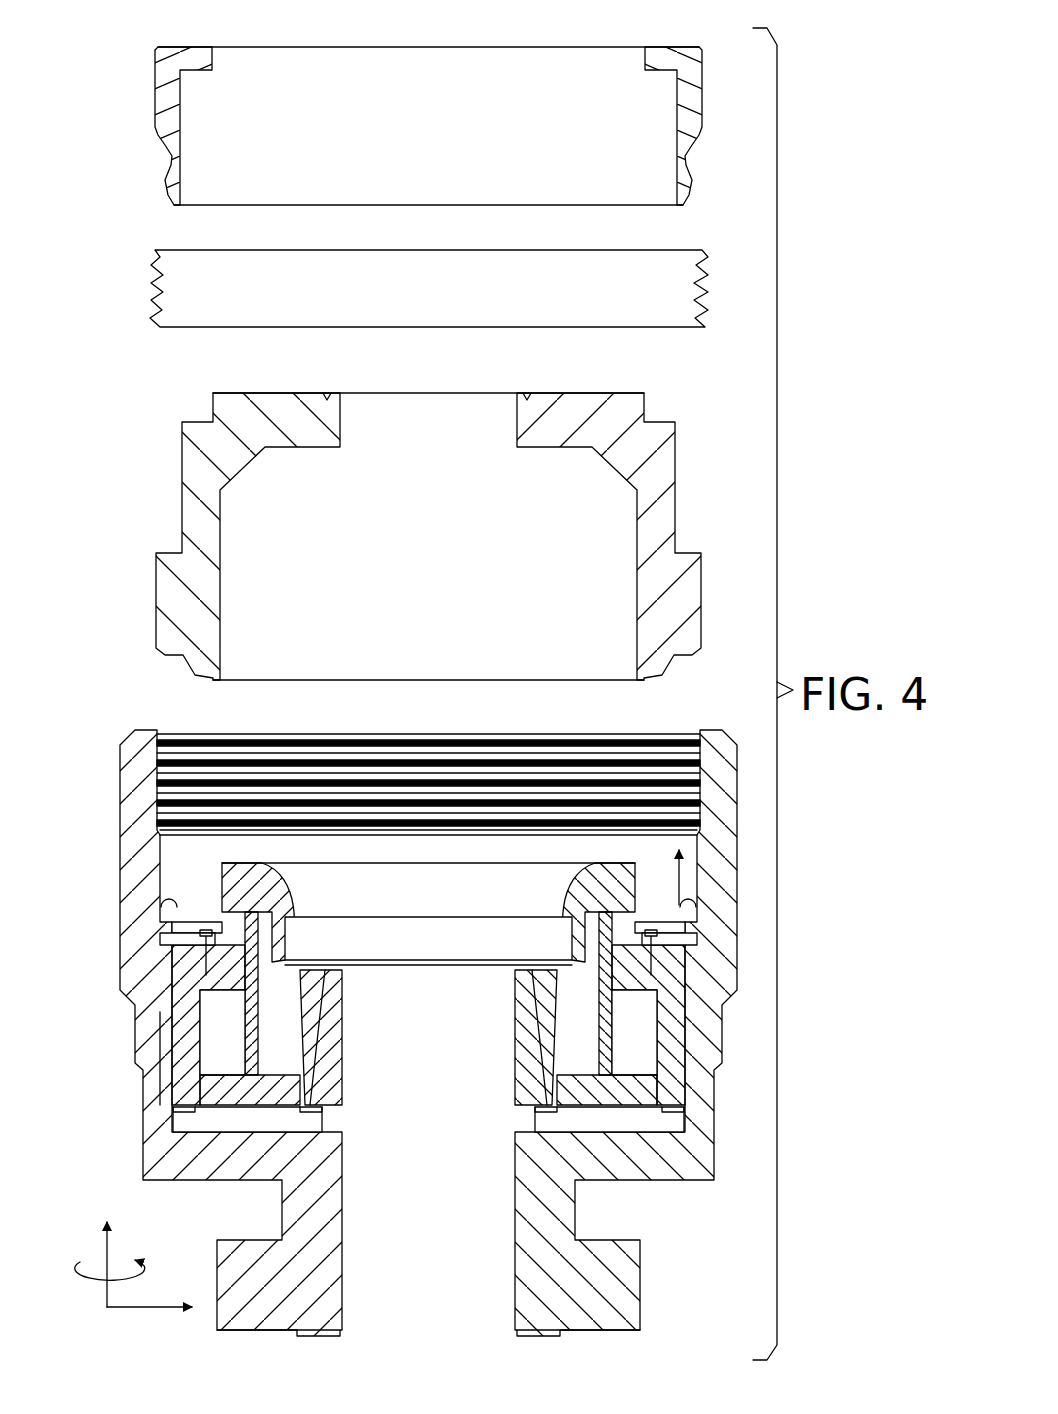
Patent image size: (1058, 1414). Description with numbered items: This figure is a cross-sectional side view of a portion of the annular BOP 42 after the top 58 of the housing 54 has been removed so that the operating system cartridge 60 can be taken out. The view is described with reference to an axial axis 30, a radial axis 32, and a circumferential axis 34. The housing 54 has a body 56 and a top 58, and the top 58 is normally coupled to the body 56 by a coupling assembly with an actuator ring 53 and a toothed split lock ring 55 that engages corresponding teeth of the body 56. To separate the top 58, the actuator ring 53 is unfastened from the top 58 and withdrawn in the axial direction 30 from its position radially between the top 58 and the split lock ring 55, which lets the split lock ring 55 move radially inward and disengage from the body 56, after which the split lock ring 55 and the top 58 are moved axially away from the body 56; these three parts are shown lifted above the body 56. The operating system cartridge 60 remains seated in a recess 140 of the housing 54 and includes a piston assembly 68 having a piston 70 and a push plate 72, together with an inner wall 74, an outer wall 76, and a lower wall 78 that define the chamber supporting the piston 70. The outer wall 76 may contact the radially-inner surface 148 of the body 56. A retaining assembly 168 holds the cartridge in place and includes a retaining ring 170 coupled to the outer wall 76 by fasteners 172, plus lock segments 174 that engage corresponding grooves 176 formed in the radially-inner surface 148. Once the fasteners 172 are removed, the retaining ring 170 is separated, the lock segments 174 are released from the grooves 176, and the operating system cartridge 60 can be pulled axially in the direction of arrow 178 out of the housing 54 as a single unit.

The axial axis 30 is at (105, 1252).
The radial axis 32 is at (145, 1308).
The circumferential axis 34 is at (82, 1272).
The annular BOP 42 is at (642, 716).
The actuator ring 53 is at (175, 55).
The housing 54 is at (118, 1050).
The split lock ring 55 is at (152, 273).
The body 56 is at (145, 962).
The top 58 is at (205, 455).
The operating system cartridge 60 is at (258, 1140).
The piston assembly 68 is at (280, 1058).
The piston 70 is at (253, 1025).
The push plate 72 is at (275, 900).
The inner wall 74 is at (338, 1050).
The outer wall 76 is at (190, 1060).
The lower wall 78 is at (228, 1135).
The recess 140 is at (175, 1140).
The radially-inner surface 148 is at (690, 910).
The retaining assembly 168 is at (172, 1012).
The retaining ring 170 is at (265, 948).
The fasteners 172 is at (205, 930).
The lock segments 174 is at (215, 922).
The grooves 176 is at (165, 935).
The arrow 178 is at (670, 862).